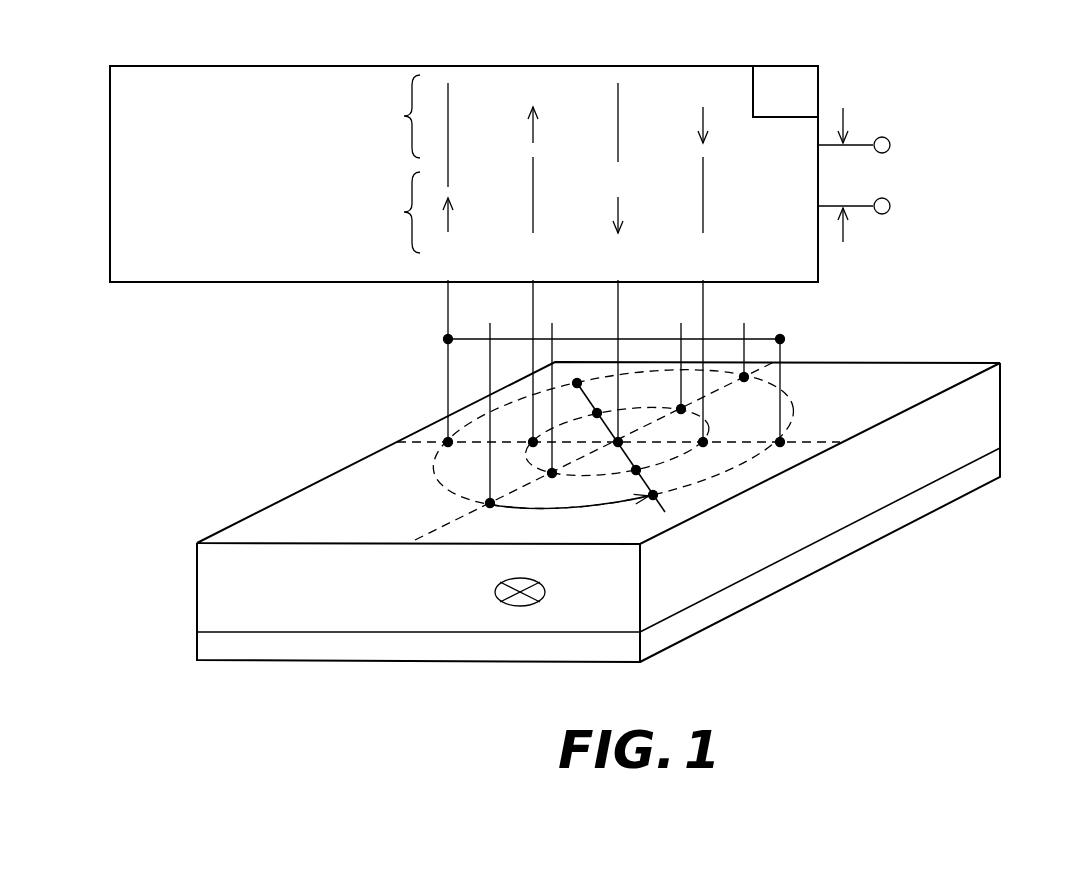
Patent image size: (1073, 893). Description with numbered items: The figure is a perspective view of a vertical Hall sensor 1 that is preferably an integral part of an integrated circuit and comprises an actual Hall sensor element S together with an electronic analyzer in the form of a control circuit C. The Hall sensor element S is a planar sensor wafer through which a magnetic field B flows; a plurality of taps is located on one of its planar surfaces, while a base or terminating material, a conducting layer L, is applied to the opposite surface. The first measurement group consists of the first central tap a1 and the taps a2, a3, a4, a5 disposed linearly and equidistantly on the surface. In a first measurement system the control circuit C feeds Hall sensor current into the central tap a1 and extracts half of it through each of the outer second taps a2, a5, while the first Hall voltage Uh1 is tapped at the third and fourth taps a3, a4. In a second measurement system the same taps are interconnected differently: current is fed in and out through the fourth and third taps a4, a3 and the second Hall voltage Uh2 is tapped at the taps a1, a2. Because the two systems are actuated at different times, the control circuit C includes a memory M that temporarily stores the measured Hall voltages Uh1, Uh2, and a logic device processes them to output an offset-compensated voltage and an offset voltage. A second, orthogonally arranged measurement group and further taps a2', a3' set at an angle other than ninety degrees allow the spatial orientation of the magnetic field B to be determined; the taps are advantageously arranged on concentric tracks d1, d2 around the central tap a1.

The Hall sensor 1 is at (977, 98).
The control circuit C is at (223, 282).
The memory M is at (785, 91).
The Hall sensor element S is at (323, 478).
The conducting layer L is at (870, 544).
The magnetic field B is at (533, 592).
The concentric track d1 is at (796, 406).
The concentric track d2 is at (672, 457).
The first central tap a1 is at (615, 265).
The second tap a2 is at (444, 265).
The third tap a3 is at (535, 277).
The fourth tap a4 is at (705, 277).
The second tap a5 is at (619, 373).
The additional tap a2' is at (653, 449).
The additional tap a3' is at (637, 425).
The first Hall voltage Uh1 is at (703, 183).
The second Hall voltage Uh2 is at (618, 83).